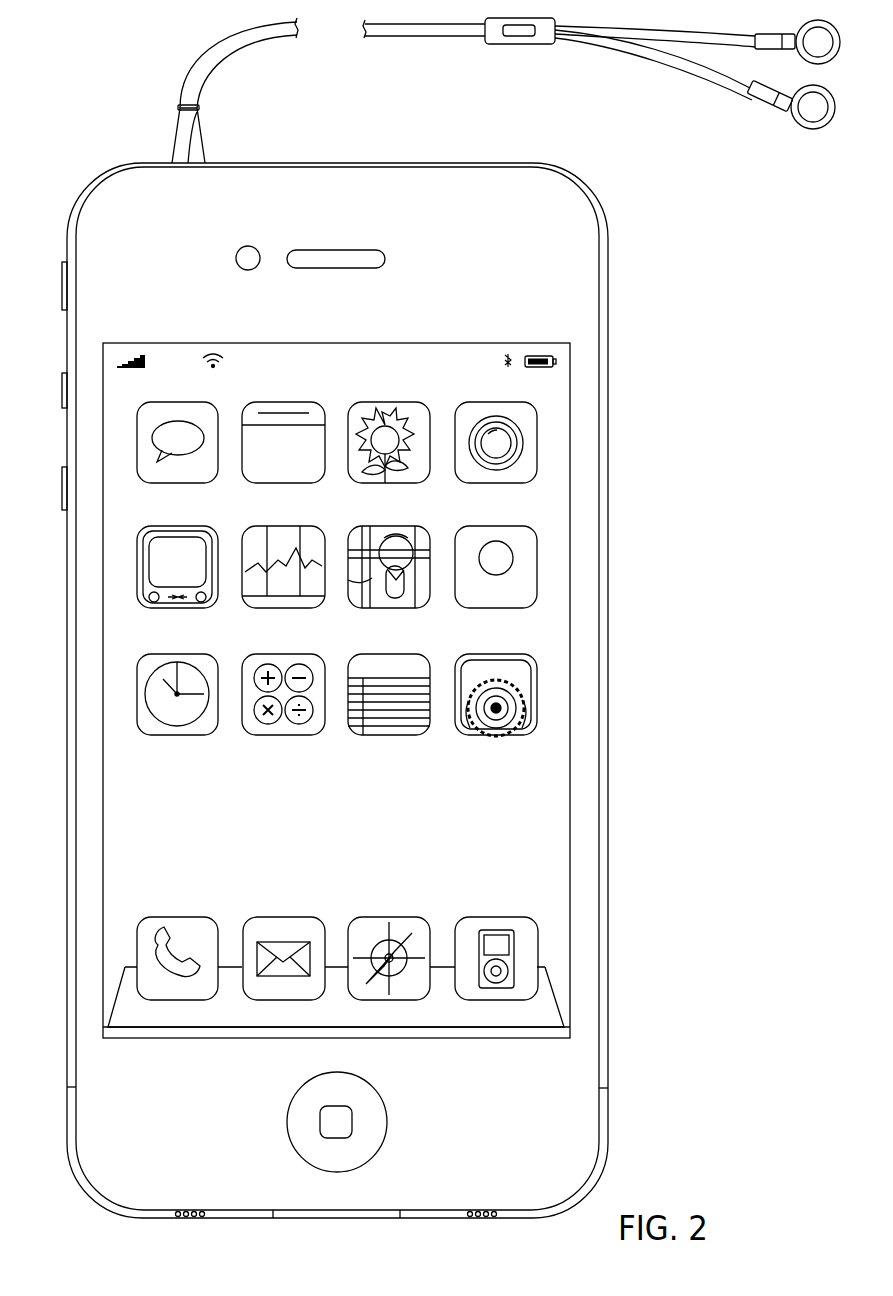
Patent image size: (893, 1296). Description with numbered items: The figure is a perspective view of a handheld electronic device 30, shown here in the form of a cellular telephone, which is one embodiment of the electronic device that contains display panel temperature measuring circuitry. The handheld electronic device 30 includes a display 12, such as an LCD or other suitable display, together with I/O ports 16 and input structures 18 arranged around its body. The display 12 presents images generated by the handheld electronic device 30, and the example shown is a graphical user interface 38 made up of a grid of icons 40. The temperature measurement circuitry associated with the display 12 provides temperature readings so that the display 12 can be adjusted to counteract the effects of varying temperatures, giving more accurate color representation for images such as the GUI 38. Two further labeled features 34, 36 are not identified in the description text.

The portable electronic device 12 is at (356, 677).
The input/output ports 16 is at (196, 122).
The input structures 18 is at (488, 162).
The headset accessory 30 is at (157, 128).
The enclosure 34 is at (608, 337).
The display 36 is at (570, 657).
The graphical user interface 38 is at (553, 821).
The graphical icons 40 is at (178, 402).